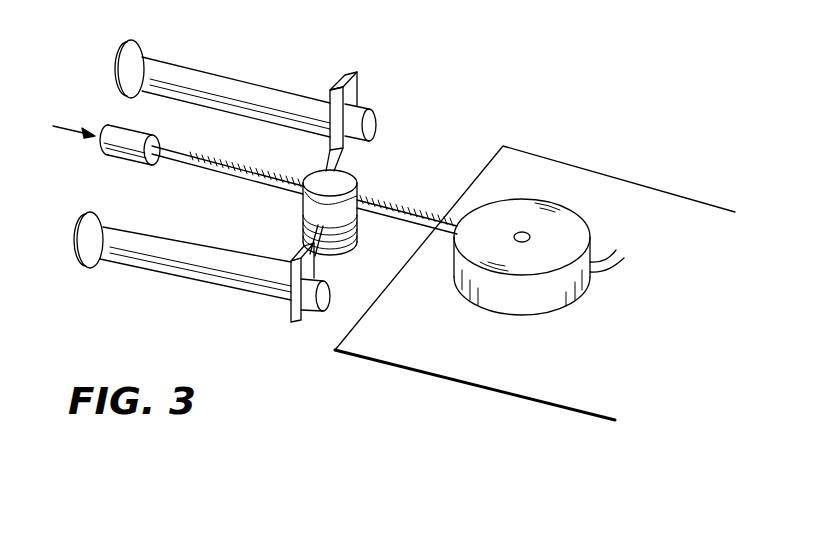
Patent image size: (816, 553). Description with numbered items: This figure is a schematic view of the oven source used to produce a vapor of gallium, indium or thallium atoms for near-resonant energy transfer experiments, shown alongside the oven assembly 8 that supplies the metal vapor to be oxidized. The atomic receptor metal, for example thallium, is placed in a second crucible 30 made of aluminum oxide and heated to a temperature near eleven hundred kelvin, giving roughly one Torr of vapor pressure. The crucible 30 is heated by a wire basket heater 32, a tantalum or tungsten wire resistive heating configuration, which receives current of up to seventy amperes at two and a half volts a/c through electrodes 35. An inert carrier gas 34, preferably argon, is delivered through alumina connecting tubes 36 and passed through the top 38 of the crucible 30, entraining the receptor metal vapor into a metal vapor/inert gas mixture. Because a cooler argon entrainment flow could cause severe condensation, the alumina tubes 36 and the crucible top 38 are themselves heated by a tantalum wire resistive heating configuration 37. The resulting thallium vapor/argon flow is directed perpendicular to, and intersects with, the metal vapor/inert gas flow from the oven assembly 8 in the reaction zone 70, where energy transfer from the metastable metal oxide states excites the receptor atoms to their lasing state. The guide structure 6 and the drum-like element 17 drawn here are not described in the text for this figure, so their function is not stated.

The drive assembly 6 is at (307, 61).
The oven assembly 8 is at (469, 394).
The reel drum 17 is at (565, 220).
The second crucible 30 is at (313, 214).
The wire basket heater 32 is at (334, 257).
The inert carrier gas 34 is at (70, 124).
The electrodes 35 is at (185, 72).
The alumina connecting tubes 36 is at (178, 160).
The tantalum wire resistive heating configuration 37 is at (165, 177).
The top of the crucible 38 is at (341, 183).
The reaction zone 70 is at (499, 218).